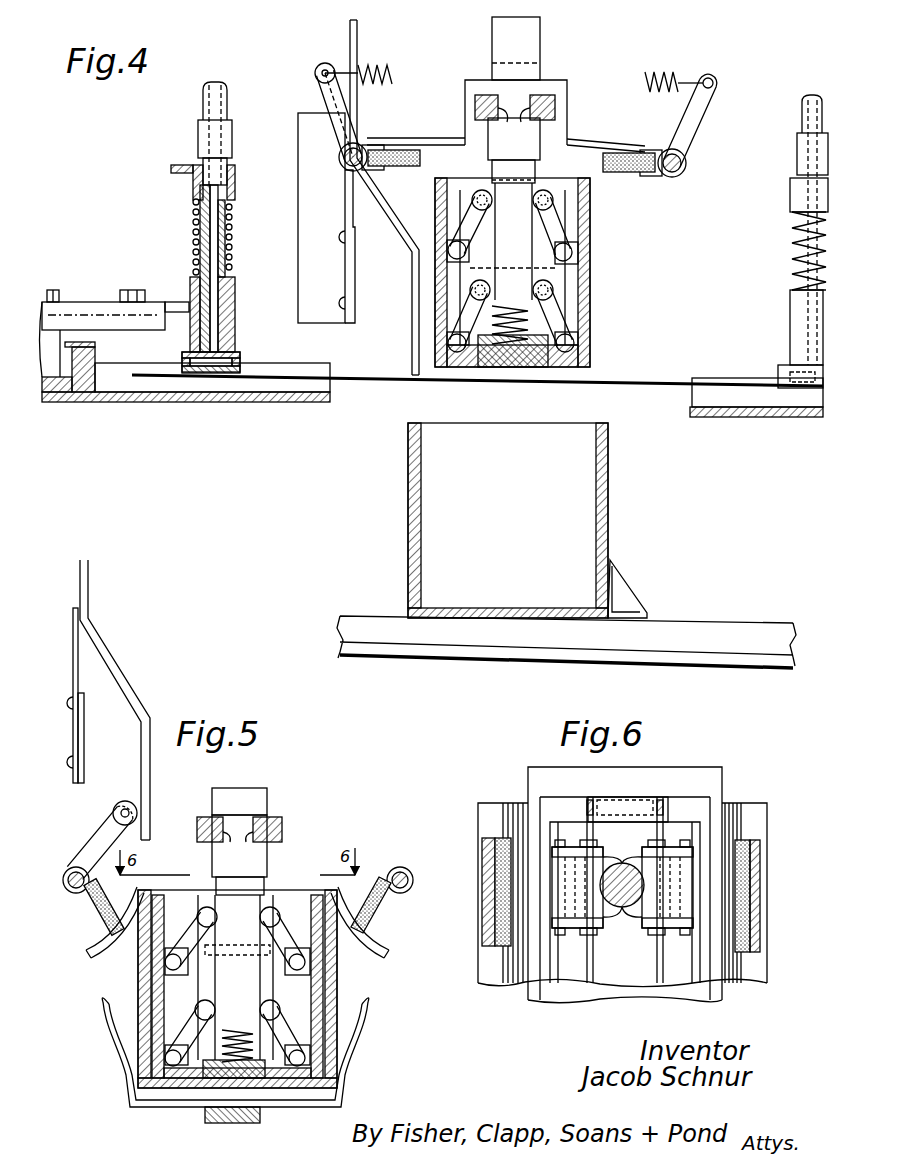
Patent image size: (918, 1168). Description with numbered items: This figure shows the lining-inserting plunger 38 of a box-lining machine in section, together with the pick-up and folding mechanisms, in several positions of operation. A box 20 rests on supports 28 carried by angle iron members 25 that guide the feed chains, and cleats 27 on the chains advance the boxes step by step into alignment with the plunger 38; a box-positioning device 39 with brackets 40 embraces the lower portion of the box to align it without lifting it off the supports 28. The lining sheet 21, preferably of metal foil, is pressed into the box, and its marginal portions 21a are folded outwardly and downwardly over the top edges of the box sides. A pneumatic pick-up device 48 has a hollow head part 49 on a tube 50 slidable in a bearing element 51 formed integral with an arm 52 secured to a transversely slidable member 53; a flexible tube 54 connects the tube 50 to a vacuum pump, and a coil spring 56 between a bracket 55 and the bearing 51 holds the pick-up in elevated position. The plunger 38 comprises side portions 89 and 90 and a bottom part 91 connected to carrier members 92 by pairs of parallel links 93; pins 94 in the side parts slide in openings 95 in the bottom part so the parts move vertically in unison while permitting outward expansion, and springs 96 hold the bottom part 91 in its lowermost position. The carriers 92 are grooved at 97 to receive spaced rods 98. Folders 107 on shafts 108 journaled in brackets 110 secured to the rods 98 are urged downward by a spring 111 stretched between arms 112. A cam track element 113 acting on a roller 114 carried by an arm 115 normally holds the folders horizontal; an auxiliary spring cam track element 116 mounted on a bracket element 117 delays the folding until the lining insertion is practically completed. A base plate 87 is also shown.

In FIG. 4, the box 20 is at (608, 526).
In FIG. 5, the box 20 is at (140, 975).
In FIG. 6, the box 20 is at (723, 780).
In FIG. 4, the lining sheet 21 is at (375, 380).
In FIG. 5, the lining sheet 21 is at (140, 952).
In FIG. 6, the lining sheet 21 is at (588, 995).
In FIG. 6, the marginal portions of lining sheet 21a is at (482, 975).
In FIG. 4, the angle iron members 25 is at (733, 664).
In FIG. 4, the cleats 27 is at (612, 573).
In FIG. 4, the supports 28 is at (723, 632).
In FIG. 4, the plunger 38 is at (592, 272).
In FIG. 5, the box-positioning device 39 is at (258, 1121).
In FIG. 5, the brackets 40 is at (130, 1101).
In FIG. 4, the pneumatic pick-up device 48 is at (243, 352).
In FIG. 4, the hollow head part 49 is at (243, 366).
In FIG. 4, the tube 50 is at (236, 240).
In FIG. 4, the bearing element 51 is at (236, 315).
In FIG. 4, the arm 52 is at (105, 302).
In FIG. 4, the transversely slidably mounted member 53 is at (53, 332).
In FIG. 4, the flexible tube 54 is at (226, 92).
In FIG. 4, the bracket 55 is at (236, 180).
In FIG. 4, the coil spring 56 is at (236, 212).
In FIG. 4, the base plate 87 is at (235, 402).
In FIG. 4, the plunger side portion 89 is at (468, 368).
In FIG. 5, the plunger side portion 89 is at (150, 990).
In FIG. 6, the plunger side portion 89 is at (554, 988).
In FIG. 4, the plunger side portion 90 is at (568, 368).
In FIG. 5, the plunger side portion 90 is at (323, 995).
In FIG. 6, the plunger side portion 90 is at (682, 985).
In FIG. 4, the bottom part 91 is at (522, 368).
In FIG. 5, the bottom part 91 is at (215, 1082).
In FIG. 6, the bottom part 91 is at (622, 985).
In FIG. 4, the carrier members 92 is at (535, 168).
In FIG. 5, the carrier members 92 is at (262, 885).
In FIG. 6, the carrier members 92 is at (622, 866).
In FIG. 4, the parallel links 93 is at (468, 222).
In FIG. 5, the parallel links 93 is at (300, 946).
In FIG. 6, the parallel links 93 is at (582, 852).
In FIG. 5, the pins 94 is at (185, 975).
In FIG. 6, the pins 94 is at (590, 800).
In FIG. 5, the openings 95 is at (237, 955).
In FIG. 6, the openings 95 is at (625, 806).
In FIG. 4, the springs 96 is at (508, 310).
In FIG. 5, the springs 96 is at (238, 1030).
In FIG. 4, the grooves 97 is at (514, 139).
In FIG. 5, the grooves 97 is at (239, 846).
In FIG. 4, the rods 98 is at (476, 100).
In FIG. 5, the rods 98 is at (217, 815).
In FIG. 4, the folders 107 is at (395, 166).
In FIG. 5, the folders 107 is at (88, 914).
In FIG. 6, the folders 107 is at (495, 838).
In FIG. 4, the shafts 108 is at (345, 163).
In FIG. 5, the shafts 108 is at (66, 889).
In FIG. 4, the brackets 110 is at (412, 138).
In FIG. 4, the spring 111 is at (660, 75).
In FIG. 4, the arms 112 is at (325, 100).
In FIG. 4, the cam track element 113 is at (358, 45).
In FIG. 5, the cam track element 113 is at (79, 575).
In FIG. 4, the roller 114 is at (323, 63).
In FIG. 5, the roller 114 is at (113, 810).
In FIG. 4, the arm 115 is at (348, 92).
In FIG. 5, the arm 115 is at (108, 836).
In FIG. 4, the auxiliary cam track element 116 is at (345, 205).
In FIG. 5, the auxiliary cam track element 116 is at (75, 660).
In FIG. 4, the bracket element 117 is at (355, 300).
In FIG. 5, the bracket element 117 is at (85, 780).